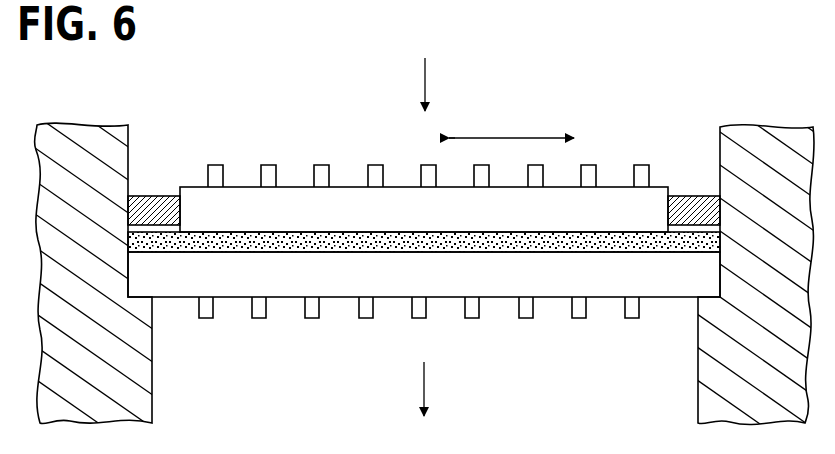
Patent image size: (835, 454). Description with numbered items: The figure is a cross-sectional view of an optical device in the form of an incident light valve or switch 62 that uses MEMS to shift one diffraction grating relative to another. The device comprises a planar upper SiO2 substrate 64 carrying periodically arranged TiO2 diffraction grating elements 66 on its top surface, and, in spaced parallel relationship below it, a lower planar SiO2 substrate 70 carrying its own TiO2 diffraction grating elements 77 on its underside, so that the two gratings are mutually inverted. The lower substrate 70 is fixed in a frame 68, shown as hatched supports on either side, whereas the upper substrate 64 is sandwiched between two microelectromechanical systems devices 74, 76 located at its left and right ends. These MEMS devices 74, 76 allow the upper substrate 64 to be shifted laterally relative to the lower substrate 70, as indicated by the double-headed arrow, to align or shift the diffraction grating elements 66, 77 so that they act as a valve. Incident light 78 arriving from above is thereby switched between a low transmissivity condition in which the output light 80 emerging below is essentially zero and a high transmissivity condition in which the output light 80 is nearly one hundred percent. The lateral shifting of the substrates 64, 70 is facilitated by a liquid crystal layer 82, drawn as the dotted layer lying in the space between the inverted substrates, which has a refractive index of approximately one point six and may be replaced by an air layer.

The incident light valve or switch 62 is at (313, 96).
The upper SiO2 substrate 64 is at (612, 185).
The TiO2 diffraction grating elements 66 is at (270, 165).
The frame 68 is at (128, 143).
The lower substrate 70 is at (167, 300).
The microelectromechanical systems (MEMS) device 74 is at (150, 208).
The microelectromechanical systems (MEMS) device 76 is at (685, 208).
The TiO2 diffraction grating elements 77 is at (365, 318).
The incident light 78 is at (425, 85).
The output light 80 is at (424, 390).
The liquid crystal layer 82 is at (337, 242).